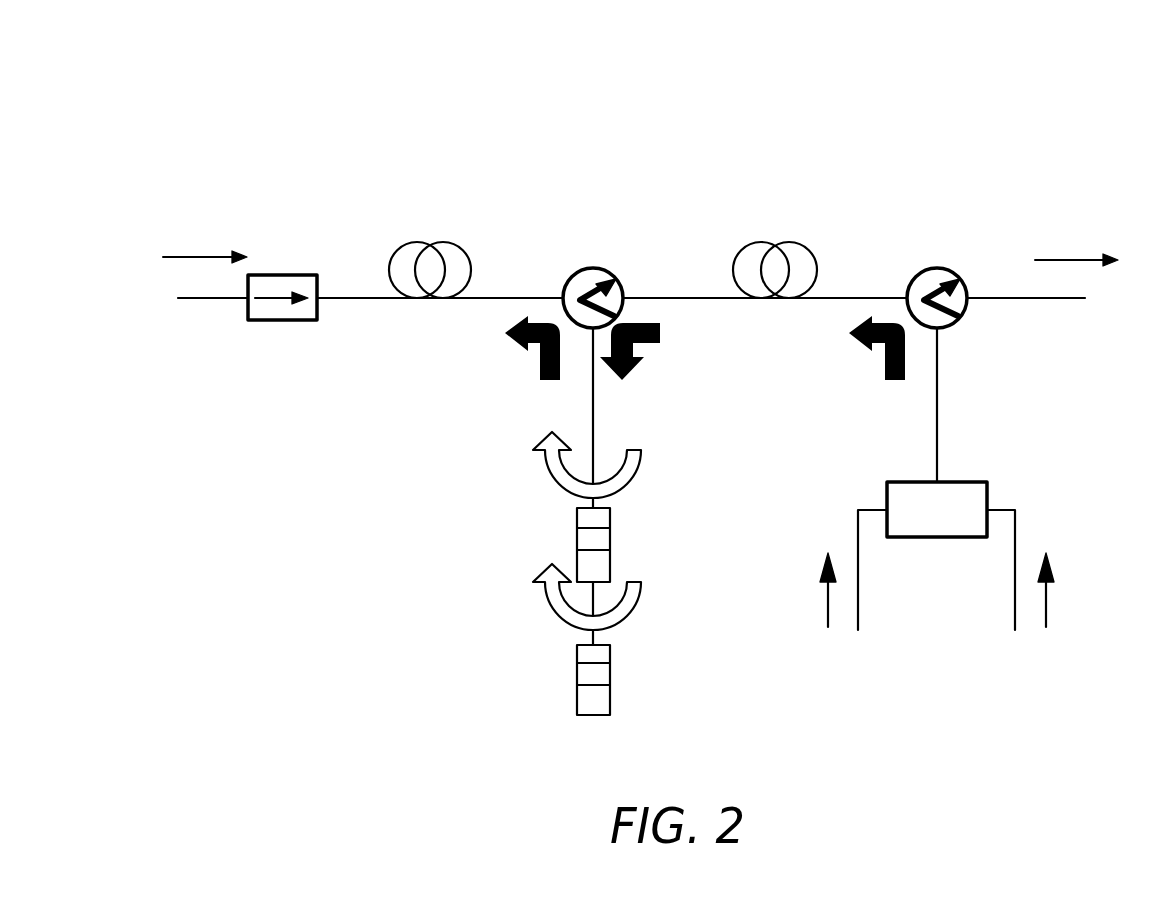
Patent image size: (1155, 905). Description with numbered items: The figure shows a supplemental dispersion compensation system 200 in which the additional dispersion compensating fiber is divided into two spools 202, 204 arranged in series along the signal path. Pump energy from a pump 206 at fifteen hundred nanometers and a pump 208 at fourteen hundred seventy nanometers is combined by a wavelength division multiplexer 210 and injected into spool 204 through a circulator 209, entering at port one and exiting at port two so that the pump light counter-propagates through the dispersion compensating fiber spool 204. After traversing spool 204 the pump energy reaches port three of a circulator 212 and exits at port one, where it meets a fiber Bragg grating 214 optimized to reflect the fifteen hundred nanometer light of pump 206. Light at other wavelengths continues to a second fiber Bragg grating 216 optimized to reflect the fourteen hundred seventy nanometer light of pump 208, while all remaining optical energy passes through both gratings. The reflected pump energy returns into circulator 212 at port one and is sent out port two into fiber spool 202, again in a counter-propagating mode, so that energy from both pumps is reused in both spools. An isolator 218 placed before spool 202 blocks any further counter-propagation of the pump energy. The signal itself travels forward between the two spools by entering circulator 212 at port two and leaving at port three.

The supplemental dispersion compensation system 200 is at (352, 87).
The spool 202 is at (397, 260).
The spool 204 is at (737, 260).
The pump 206 is at (858, 578).
The pump 208 is at (1015, 602).
The circulator 209 is at (960, 320).
The wavelength division multiplexer 210 is at (968, 482).
The circulator 212 is at (583, 270).
The fiber Bragg grating 214 is at (577, 542).
The second fiber Bragg grating 216 is at (577, 695).
The isolator 218 is at (262, 322).